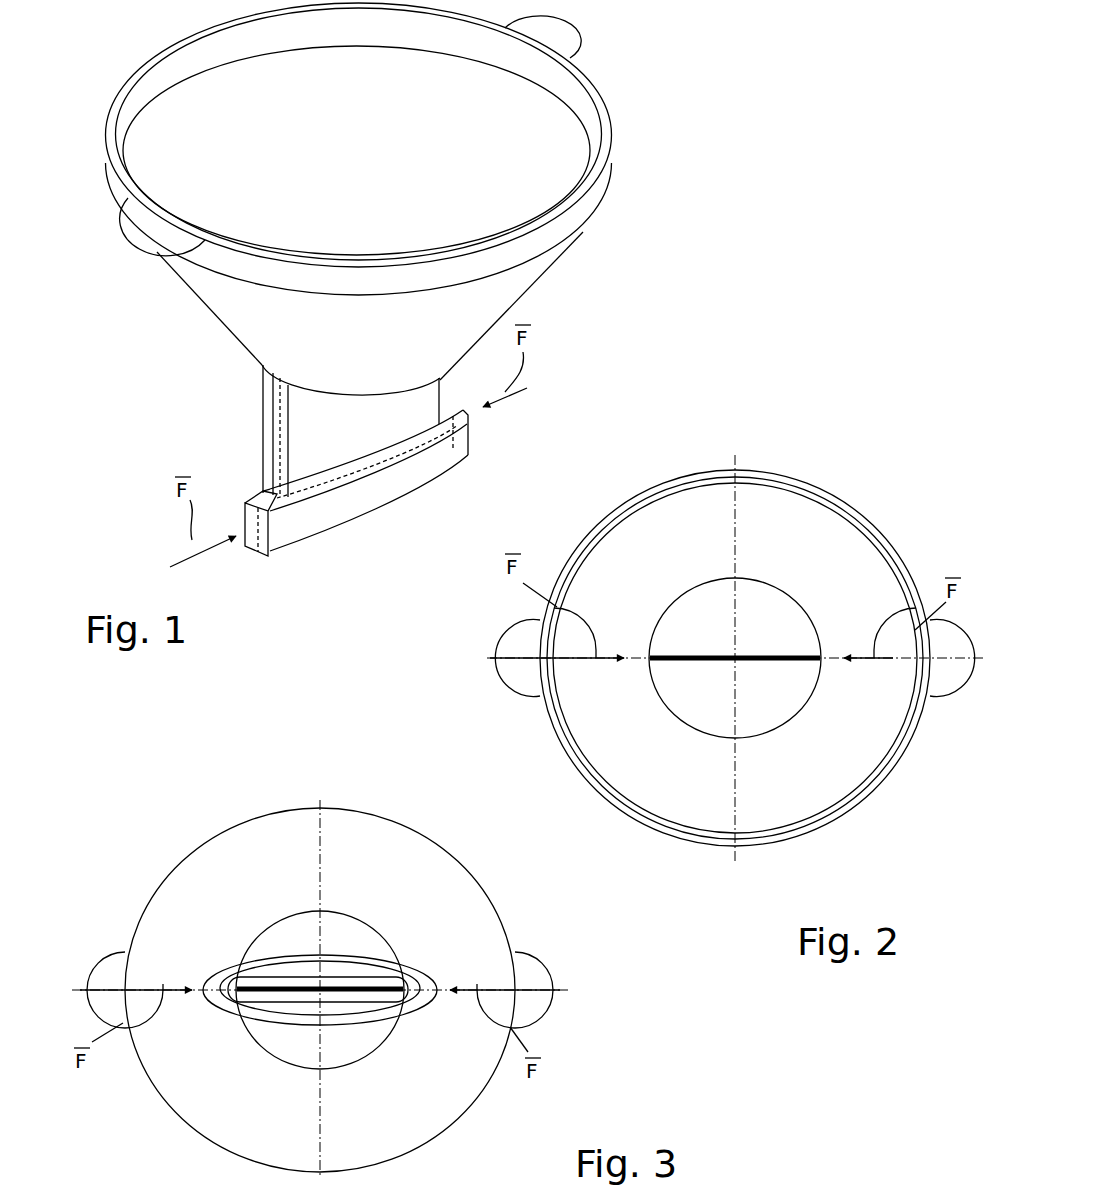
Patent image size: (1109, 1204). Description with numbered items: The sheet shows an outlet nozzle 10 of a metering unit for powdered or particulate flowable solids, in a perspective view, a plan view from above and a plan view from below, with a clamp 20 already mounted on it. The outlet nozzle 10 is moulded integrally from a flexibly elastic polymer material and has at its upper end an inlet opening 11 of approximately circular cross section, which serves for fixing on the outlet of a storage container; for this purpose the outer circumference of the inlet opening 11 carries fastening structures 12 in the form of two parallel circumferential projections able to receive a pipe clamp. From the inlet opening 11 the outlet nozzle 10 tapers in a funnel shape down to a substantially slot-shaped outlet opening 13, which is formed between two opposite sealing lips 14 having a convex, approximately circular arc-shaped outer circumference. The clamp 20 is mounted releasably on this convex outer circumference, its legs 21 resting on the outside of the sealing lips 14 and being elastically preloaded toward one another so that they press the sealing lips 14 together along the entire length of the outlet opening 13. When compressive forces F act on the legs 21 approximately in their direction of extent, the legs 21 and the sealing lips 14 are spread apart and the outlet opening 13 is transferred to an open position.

In FIG. 1, the outlet nozzle 10 is at (556, 301).
In FIG. 2, the outlet nozzle 10 is at (866, 480).
In FIG. 3, the outlet nozzle 10 is at (536, 924).
In FIG. 1, the inlet opening 11 is at (577, 98).
In FIG. 2, the inlet opening 11 is at (875, 560).
In FIG. 3, the inlet opening 11 is at (367, 807).
In FIG. 1, the fastening structures 12 is at (612, 186).
In FIG. 2, the fastening structures 12 is at (910, 563).
In FIG. 2, the outlet opening 13 is at (757, 654).
In FIG. 3, the outlet opening 13 is at (283, 982).
In FIG. 3, the sealing lips 14 is at (282, 978).
In FIG. 1, the clamp 20 is at (488, 434).
In FIG. 3, the clamp 20 is at (368, 940).
In FIG. 1, the legs 21 is at (262, 492).
In FIG. 3, the legs 21 is at (388, 972).